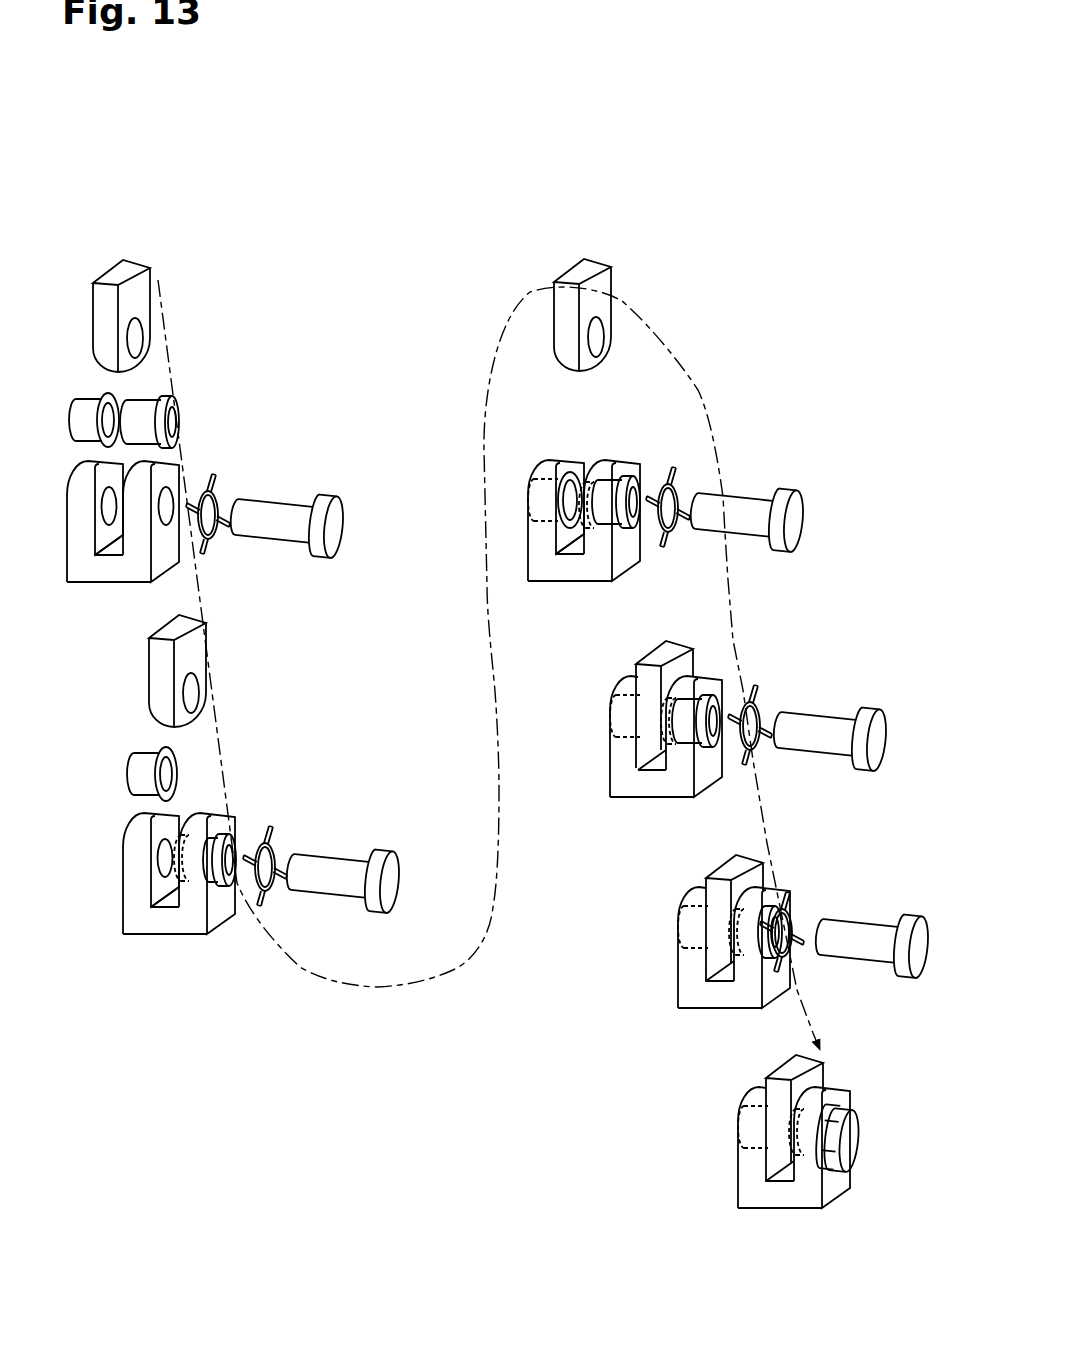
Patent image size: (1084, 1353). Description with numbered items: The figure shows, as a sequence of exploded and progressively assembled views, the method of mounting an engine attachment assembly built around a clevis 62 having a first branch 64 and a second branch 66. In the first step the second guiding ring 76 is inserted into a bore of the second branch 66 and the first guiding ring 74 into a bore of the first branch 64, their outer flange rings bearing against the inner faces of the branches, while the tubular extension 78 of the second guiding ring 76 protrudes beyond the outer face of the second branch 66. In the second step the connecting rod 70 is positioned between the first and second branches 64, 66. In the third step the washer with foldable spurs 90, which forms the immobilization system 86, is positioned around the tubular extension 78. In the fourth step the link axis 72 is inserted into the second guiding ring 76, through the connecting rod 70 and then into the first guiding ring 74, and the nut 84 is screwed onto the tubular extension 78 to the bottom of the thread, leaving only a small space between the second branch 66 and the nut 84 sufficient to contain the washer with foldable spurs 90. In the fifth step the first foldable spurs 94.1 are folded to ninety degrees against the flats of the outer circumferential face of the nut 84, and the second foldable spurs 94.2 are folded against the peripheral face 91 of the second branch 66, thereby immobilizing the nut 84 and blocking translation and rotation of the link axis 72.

The clevis 62 is at (105, 570).
The first branch 64 is at (80, 570).
The second branch 66 is at (138, 566).
The connecting rod 70 is at (155, 263).
The link axis 72 is at (297, 505).
The first guiding ring 74 is at (78, 402).
The second guiding ring 76 is at (155, 396).
The tubular extension 78 is at (183, 396).
The nut 84 is at (346, 503).
The immobilization system 86 is at (216, 476).
The washer with foldable spurs 90 is at (226, 494).
The peripheral face 91 is at (699, 667).
The first foldable spurs 94.1 is at (846, 1099).
The second foldable spurs 94.2 is at (757, 1157).